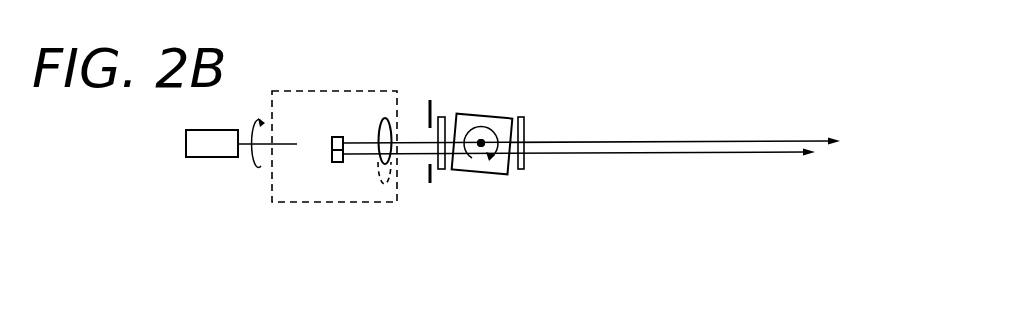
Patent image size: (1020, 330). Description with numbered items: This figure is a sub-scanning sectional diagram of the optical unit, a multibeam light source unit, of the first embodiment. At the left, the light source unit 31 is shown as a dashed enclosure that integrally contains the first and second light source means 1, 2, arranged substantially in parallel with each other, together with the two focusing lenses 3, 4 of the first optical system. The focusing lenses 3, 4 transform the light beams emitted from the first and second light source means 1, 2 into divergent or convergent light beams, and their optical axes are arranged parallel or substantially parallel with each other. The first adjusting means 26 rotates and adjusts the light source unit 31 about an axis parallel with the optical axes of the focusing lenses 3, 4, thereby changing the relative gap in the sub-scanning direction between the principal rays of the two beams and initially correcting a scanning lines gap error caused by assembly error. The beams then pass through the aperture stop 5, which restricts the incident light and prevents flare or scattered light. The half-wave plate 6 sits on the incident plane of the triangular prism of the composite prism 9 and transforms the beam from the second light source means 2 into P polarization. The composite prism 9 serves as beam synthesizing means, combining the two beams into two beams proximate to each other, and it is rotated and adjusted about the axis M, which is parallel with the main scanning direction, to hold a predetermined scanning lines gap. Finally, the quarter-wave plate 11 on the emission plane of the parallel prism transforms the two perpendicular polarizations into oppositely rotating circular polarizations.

The first adjusting means 26 is at (210, 157).
The light source unit 31 is at (288, 203).
The first light source means 1 is at (338, 162).
The second light source means 2 is at (338, 137).
The focusing lens 3 is at (384, 182).
The focusing lens 4 is at (382, 120).
The aperture stop 5 is at (428, 100).
The half-wave plate 6 is at (442, 117).
The composite prism 9 is at (481, 140).
The axis M is at (487, 140).
The quarter-wave plate 11 is at (523, 118).